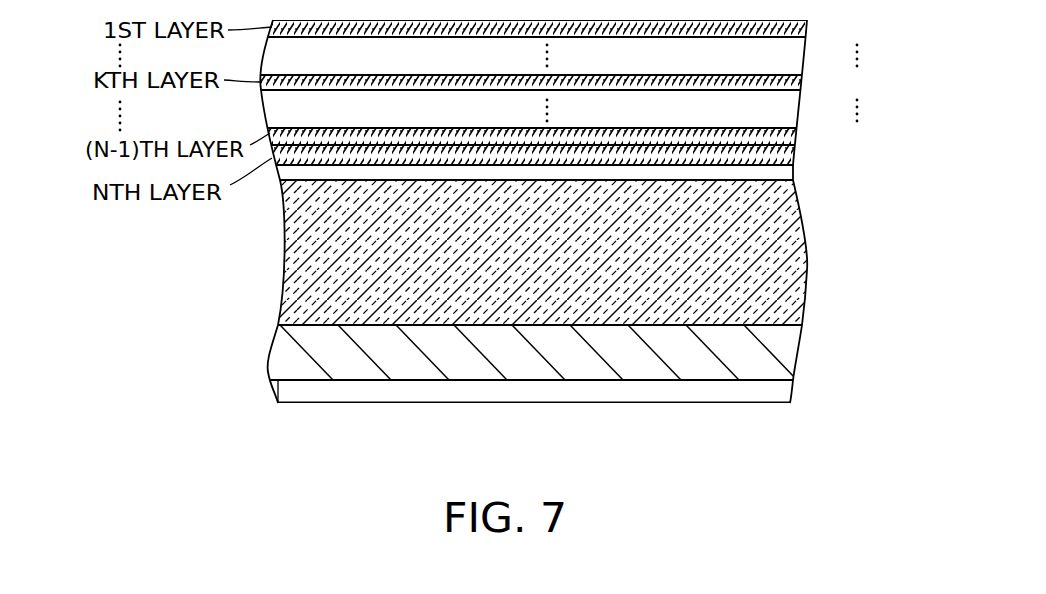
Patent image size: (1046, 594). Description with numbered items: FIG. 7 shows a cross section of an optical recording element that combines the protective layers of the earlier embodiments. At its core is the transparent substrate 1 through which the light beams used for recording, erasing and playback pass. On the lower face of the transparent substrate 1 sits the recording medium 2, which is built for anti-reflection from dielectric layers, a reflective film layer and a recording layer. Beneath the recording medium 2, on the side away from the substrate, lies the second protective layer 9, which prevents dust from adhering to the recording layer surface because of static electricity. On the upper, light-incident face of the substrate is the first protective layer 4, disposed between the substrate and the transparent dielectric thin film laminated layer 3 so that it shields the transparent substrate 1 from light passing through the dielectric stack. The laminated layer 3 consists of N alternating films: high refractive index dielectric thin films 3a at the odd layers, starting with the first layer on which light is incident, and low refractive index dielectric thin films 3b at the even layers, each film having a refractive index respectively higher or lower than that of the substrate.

The transparent substrate 1 is at (781, 233).
The recording medium 2 is at (778, 341).
The transparent dielectric thin film laminated layer 3 is at (584, 101).
The high refractive index dielectric thin film 3a is at (806, 27).
The low refractive index dielectric thin film 3b is at (793, 82).
The first protective layer 4 is at (790, 174).
The second protective layer 9 is at (777, 390).